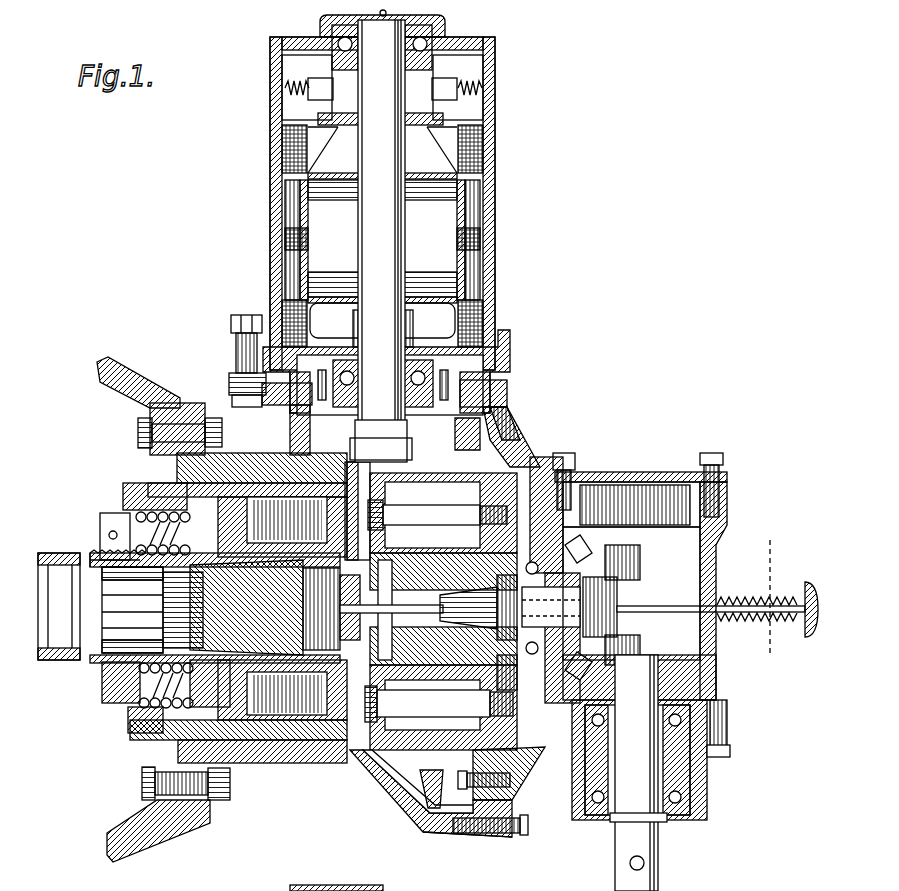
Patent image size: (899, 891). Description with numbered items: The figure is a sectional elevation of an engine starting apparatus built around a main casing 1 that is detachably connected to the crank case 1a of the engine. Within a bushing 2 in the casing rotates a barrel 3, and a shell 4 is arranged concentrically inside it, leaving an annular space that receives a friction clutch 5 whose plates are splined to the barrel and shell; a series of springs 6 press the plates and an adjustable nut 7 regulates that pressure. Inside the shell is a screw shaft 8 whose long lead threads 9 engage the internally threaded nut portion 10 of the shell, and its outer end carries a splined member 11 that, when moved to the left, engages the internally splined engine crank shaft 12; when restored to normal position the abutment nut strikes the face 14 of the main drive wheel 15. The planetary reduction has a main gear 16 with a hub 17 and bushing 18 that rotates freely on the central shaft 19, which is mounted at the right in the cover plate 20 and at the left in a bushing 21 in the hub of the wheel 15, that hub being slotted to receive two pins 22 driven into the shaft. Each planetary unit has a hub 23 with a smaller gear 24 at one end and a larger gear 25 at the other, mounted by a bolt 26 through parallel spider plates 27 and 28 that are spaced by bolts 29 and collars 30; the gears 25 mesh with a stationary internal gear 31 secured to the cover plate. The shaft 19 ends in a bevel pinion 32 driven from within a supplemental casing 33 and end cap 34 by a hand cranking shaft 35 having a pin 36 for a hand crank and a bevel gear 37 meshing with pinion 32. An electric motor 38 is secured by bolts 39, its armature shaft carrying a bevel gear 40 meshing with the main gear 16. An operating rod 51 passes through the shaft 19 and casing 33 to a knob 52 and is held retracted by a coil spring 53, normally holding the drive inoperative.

The main casing 1 is at (230, 456).
The crank case 1a is at (148, 836).
The bushing 2 is at (180, 433).
The barrel 3 is at (128, 491).
The shell 4 is at (95, 555).
The friction clutch 5 is at (266, 497).
The springs 6 is at (150, 736).
The adjustable nut 7 is at (102, 516).
The screw shaft 8 is at (103, 668).
The long lead threads 9 is at (264, 610).
The nut portion 10 is at (186, 616).
The splined member 11 is at (115, 625).
The engine crank shaft 12 is at (56, 663).
The face 14 is at (351, 599).
The main drive wheel 15 is at (387, 768).
The main gear 16 is at (437, 447).
The hub 17 is at (505, 672).
The bushing 18 is at (505, 576).
The central shaft 19 is at (602, 587).
The cover plate 20 is at (542, 468).
The bushing 21 is at (370, 610).
The pins 22 is at (304, 777).
The hub 23 is at (500, 403).
The gear 24 is at (350, 455).
The gear 25 is at (498, 447).
The bolt 26 is at (445, 513).
The spider plate 27 is at (342, 776).
The spider plate 28 is at (505, 752).
The bolts 29 is at (433, 703).
The collars 30 is at (439, 704).
The stationary internal gear 31 is at (457, 834).
The bevel pinion 32 is at (596, 557).
The supplemental casing 33 is at (725, 531).
The end cap 34 is at (703, 790).
The hand cranking shaft 35 is at (658, 842).
The pin 36 is at (644, 865).
The bevel gear 37 is at (718, 655).
The electric motor 38 is at (492, 276).
The bolts 39 is at (246, 315).
The bevel gear 40 is at (310, 422).
The operating rod 51 is at (779, 591).
The knob 52 is at (812, 634).
The coil spring 53 is at (774, 608).